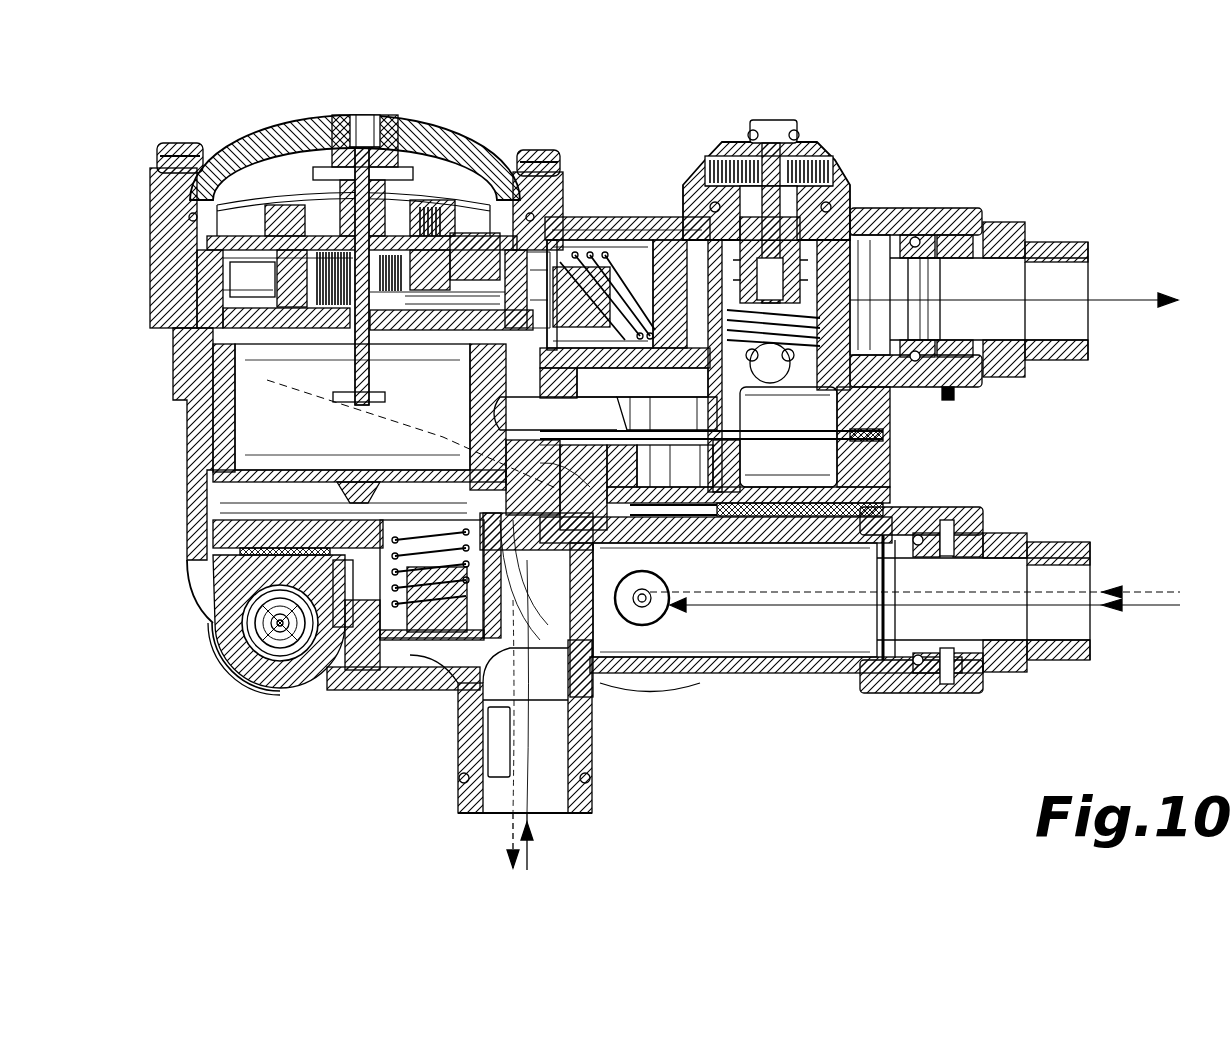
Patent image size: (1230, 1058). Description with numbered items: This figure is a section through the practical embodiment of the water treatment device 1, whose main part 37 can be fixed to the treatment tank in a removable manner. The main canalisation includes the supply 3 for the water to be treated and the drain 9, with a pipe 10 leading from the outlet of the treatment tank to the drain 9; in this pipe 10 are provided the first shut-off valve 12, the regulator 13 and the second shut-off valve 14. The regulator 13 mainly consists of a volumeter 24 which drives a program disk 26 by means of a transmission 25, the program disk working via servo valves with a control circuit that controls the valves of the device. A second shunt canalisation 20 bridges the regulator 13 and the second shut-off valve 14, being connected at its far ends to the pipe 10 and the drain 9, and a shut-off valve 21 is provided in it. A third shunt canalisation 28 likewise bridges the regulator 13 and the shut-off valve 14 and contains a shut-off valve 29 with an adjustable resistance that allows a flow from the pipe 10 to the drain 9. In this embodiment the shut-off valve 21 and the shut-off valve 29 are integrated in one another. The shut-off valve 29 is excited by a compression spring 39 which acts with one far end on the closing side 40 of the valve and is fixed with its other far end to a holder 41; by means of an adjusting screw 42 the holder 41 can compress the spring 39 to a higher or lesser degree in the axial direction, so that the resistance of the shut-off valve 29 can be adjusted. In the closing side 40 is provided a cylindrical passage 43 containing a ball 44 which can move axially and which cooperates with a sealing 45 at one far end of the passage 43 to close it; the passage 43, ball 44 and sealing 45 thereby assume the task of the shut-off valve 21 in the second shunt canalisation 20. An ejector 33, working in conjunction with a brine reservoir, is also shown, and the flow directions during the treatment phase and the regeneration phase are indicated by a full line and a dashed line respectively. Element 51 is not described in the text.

The device 1 is at (556, 420).
The supply 3 is at (1067, 623).
The drain 9 is at (1080, 317).
The pipe 10 is at (562, 238).
The first shut-off valve 12 is at (388, 602).
The regulator 13 is at (452, 182).
The second shut-off valve 14 is at (602, 258).
The second shunt canalisation 20 is at (900, 420).
The shut-off valve 21 is at (840, 345).
The volumeter 24 is at (257, 440).
The transmission 25 is at (262, 297).
The program disk 26 is at (415, 215).
The third shunt canalisation 28 is at (800, 452).
The shut-off valve with adjustable resistance 29 is at (838, 277).
The ejector 33 is at (262, 625).
The main part 37 is at (1003, 102).
The compression spring 39 is at (800, 300).
The closing side 40 is at (950, 392).
The holder 41 is at (683, 210).
The adjusting screw 42 is at (773, 160).
The cylindrical passage 43 is at (880, 430).
The ball 44 is at (850, 410).
The sealing 45 is at (700, 290).
The regulator block 51 is at (258, 300).